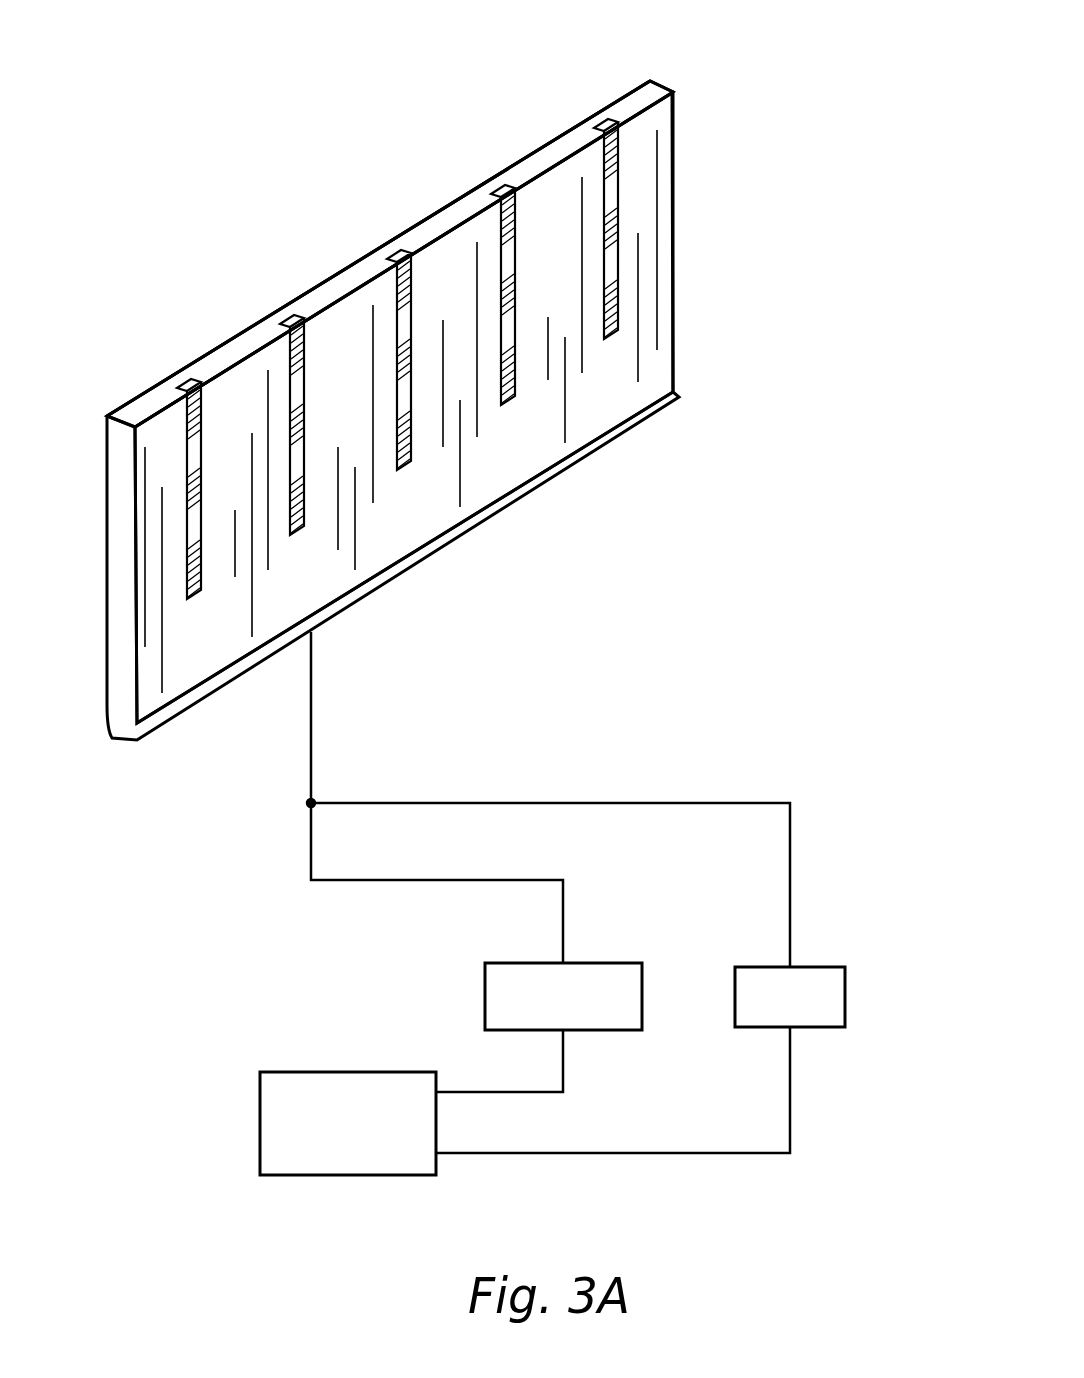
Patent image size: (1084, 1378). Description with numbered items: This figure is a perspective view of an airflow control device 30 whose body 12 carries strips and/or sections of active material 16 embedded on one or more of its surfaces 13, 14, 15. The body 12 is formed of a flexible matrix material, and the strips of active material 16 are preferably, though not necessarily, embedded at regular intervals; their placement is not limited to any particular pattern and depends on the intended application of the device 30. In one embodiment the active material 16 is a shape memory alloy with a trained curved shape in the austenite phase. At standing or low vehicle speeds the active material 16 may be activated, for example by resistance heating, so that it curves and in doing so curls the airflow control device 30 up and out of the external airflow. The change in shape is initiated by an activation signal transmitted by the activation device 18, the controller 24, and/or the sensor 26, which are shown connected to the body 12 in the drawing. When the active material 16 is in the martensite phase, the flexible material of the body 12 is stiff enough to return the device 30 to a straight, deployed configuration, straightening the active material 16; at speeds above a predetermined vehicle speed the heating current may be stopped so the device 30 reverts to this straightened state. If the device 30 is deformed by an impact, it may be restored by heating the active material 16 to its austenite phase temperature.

The body 12 is at (228, 339).
The surface 13 is at (620, 97).
The surface 14 is at (543, 153).
The surface 15 is at (452, 435).
The active material 16 is at (297, 532).
The activation device 18 is at (598, 962).
The controller 24 is at (325, 1072).
The sensor 26 is at (847, 984).
The airflow control device 30 is at (345, 135).